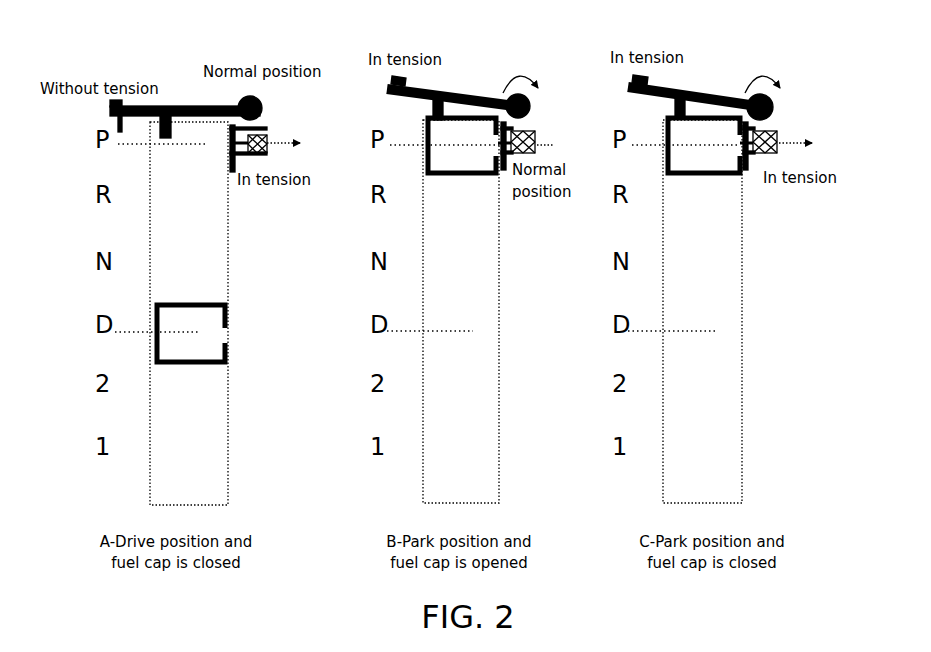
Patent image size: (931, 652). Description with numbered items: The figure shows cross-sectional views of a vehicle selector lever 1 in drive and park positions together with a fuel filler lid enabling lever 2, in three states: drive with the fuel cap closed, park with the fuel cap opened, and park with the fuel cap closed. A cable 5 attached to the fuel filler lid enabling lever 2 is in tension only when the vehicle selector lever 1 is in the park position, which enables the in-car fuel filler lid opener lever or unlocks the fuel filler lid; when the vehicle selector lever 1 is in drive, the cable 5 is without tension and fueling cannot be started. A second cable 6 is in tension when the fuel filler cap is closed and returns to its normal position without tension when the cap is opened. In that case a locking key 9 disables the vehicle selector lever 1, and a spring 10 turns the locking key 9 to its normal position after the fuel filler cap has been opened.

In FIG. 2A, the vehicle selector lever 1 is at (188, 366).
In FIG. 2B, the vehicle selector lever 1 is at (450, 176).
In FIG. 2C, the vehicle selector lever 1 is at (690, 176).
In FIG. 2A, the fuel filler lid enabling lever 2 is at (202, 104).
In FIG. 2B, the fuel filler lid enabling lever 2 is at (444, 89).
In FIG. 2C, the fuel filler lid enabling lever 2 is at (688, 88).
In FIG. 2A, the cable 5 is at (115, 129).
In FIG. 2B, the cable 5 is at (402, 96).
In FIG. 2C, the cable 5 is at (643, 96).
In FIG. 2B, the cable 6 is at (552, 145).
In FIG. 2C, the cable 6 is at (805, 145).
In FIG. 2A, the locking key 9 is at (240, 143).
In FIG. 2B, the locking key 9 is at (497, 141).
In FIG. 2C, the locking key 9 is at (739, 141).
In FIG. 2A, the spring 10 is at (264, 132).
In FIG. 2B, the spring 10 is at (530, 131).
In FIG. 2C, the spring 10 is at (773, 131).